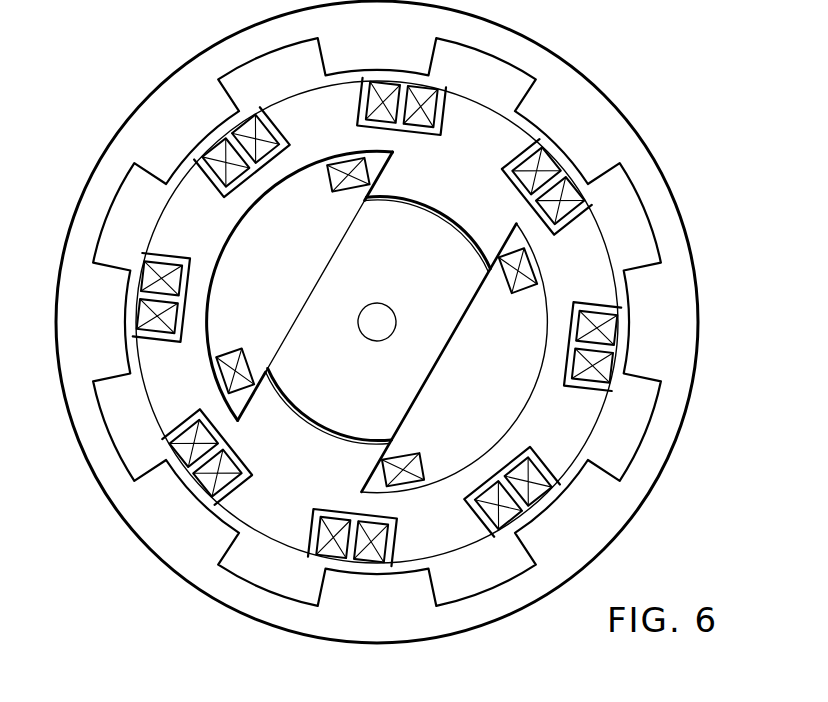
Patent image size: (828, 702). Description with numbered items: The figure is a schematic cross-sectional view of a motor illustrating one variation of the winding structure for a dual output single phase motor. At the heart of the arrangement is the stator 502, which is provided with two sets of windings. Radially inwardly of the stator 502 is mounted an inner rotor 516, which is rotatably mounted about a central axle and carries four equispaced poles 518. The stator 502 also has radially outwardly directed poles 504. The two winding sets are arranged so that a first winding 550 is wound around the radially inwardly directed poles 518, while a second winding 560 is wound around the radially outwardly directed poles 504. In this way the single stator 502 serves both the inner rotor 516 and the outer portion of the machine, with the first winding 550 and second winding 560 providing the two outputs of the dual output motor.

The stator 502 is at (305, 486).
The radially outwardly directed poles 504 is at (197, 183).
The inner rotor 516 is at (365, 391).
The poles 518 is at (472, 196).
The first winding 550 is at (522, 256).
The second winding 560 is at (423, 97).